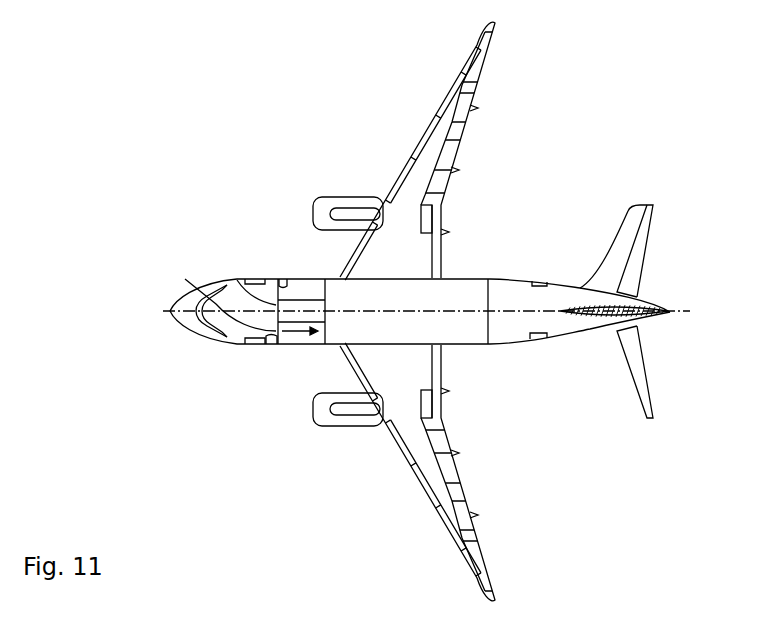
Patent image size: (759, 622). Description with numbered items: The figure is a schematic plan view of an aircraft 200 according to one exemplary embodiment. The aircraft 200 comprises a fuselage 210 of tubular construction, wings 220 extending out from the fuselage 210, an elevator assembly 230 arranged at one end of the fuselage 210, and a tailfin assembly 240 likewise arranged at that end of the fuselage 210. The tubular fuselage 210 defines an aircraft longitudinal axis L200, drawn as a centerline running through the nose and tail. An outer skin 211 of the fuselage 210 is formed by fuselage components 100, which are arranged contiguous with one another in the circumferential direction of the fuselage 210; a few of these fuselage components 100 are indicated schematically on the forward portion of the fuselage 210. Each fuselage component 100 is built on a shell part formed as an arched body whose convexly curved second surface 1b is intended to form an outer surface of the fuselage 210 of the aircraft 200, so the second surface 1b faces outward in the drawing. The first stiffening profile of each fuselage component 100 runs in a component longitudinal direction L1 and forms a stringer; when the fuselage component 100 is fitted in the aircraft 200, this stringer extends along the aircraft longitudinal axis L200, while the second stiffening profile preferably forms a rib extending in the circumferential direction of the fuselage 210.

The fuselage component 100 is at (244, 298).
The second surface 1b is at (291, 345).
The component longitudinal direction L1 is at (218, 298).
The aircraft longitudinal axis L200 is at (488, 280).
The aircraft 200 is at (510, 182).
The fuselage 210 is at (477, 344).
The outer skin 211 is at (503, 346).
The wings 220 is at (436, 551).
The elevator assembly 230 is at (648, 197).
The tailfin assembly 240 is at (585, 319).